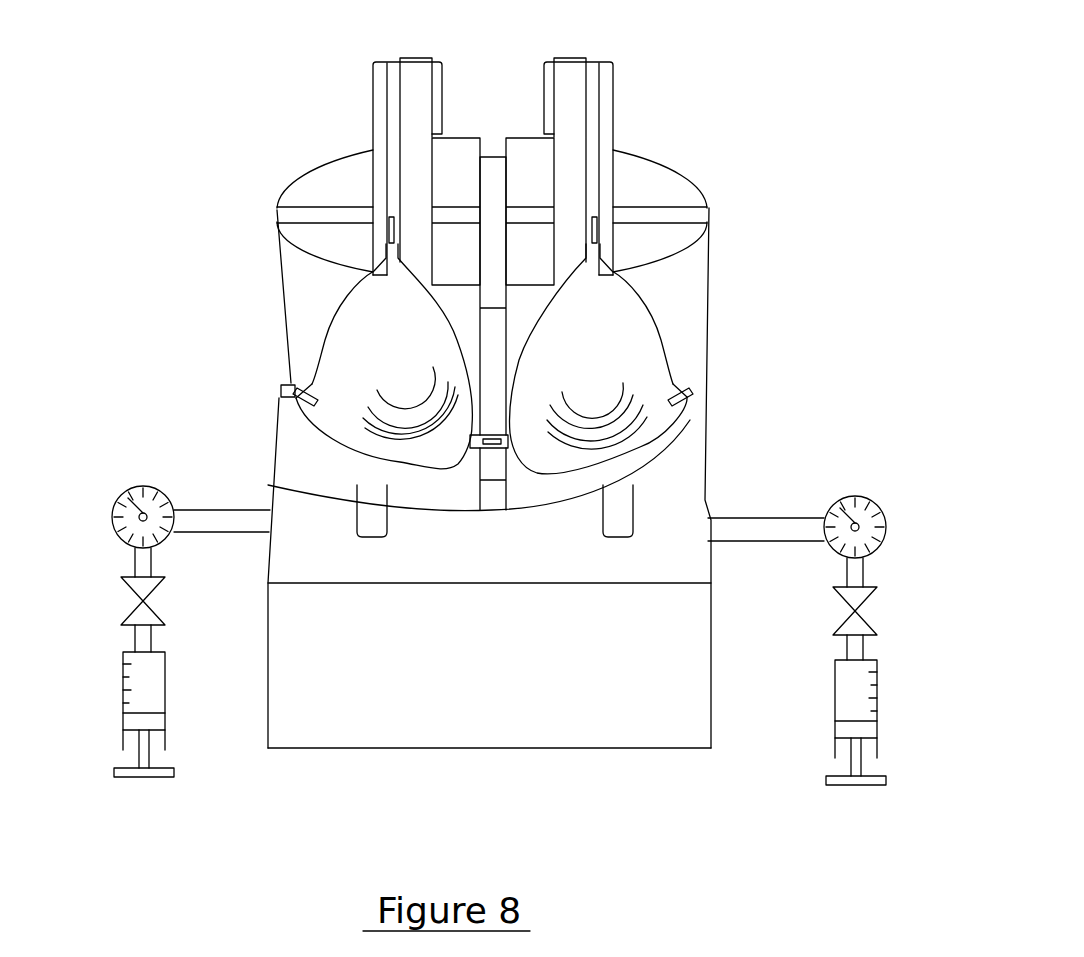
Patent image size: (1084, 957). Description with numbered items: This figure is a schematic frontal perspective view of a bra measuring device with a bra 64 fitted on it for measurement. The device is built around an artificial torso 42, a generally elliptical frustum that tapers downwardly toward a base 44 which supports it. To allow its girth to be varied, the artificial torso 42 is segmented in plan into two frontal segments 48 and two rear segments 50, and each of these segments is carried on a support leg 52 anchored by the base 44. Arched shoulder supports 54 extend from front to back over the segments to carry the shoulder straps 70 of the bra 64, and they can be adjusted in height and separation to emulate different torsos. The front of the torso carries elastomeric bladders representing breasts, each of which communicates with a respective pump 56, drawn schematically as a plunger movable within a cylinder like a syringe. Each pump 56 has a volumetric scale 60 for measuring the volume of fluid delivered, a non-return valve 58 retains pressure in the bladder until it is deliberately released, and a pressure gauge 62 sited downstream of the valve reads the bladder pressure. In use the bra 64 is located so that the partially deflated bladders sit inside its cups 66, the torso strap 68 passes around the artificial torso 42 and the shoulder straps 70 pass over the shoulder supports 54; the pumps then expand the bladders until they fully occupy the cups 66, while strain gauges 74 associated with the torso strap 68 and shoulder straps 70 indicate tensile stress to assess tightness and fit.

The artificial torso 42 is at (722, 261).
The base 44 is at (492, 686).
The frontal segments 48 is at (308, 237).
The rear segments 50 is at (350, 173).
The support leg 52 is at (370, 510).
The arched shoulder supports 54 is at (413, 70).
The pump 56 is at (158, 695).
The non-return valve 58 is at (148, 590).
The volumetric scale 60 is at (132, 692).
The pressure gauge 62 is at (140, 486).
The bra 64 is at (628, 327).
The cups 66 is at (405, 380).
The torso strap 68 is at (305, 385).
The shoulder straps 70 is at (387, 97).
The strain gauges 74 is at (390, 232).